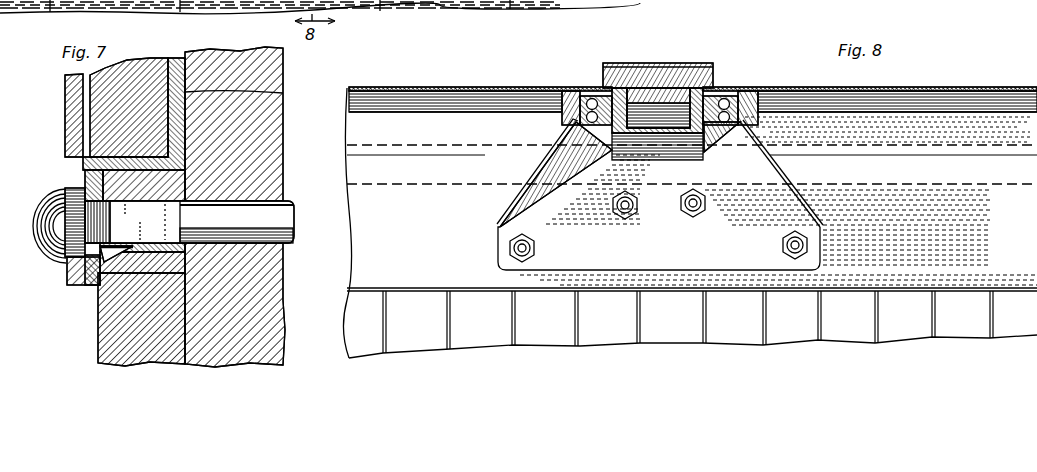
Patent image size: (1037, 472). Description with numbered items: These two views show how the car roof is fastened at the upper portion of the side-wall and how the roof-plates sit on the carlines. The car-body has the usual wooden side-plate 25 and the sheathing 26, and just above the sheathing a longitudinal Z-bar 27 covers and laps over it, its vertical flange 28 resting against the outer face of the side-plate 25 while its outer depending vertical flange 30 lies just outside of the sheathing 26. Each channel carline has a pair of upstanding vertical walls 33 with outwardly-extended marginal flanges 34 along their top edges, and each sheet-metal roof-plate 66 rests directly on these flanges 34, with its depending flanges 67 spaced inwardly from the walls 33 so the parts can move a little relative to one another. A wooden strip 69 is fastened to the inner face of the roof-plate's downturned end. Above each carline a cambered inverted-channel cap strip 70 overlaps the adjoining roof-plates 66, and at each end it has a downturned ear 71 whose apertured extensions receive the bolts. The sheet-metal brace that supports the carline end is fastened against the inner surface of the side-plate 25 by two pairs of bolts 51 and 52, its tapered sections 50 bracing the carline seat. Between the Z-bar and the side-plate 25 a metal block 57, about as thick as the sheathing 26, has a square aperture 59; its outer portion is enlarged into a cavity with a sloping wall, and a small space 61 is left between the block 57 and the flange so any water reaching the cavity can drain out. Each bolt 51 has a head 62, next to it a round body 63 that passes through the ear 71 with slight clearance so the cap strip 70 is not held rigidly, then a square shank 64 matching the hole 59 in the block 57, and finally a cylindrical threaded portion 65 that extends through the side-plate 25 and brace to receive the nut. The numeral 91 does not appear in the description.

In FIG. 7, the side-plate 25 is at (285, 320).
In FIG. 8, the side-plate 25 is at (692, 242).
In FIG. 7, the sheathing 26 is at (100, 341).
In FIG. 8, the sheathing 26 is at (792, 335).
In FIG. 7, the Z-bar 27 is at (82, 178).
In FIG. 7, the vertical flange 28 is at (178, 128).
In FIG. 8, the vertical flange 28 is at (690, 223).
In FIG. 7, the outer depending vertical flange 30 is at (120, 272).
In FIG. 8, the upstanding vertical walls 33 is at (581, 110).
In FIG. 8, the marginal flanges 34 is at (575, 95).
In FIG. 8, the tapered sections 50 is at (543, 170).
In FIG. 7, the bolts 51 is at (36, 216).
In FIG. 8, the bolts 51 is at (687, 194).
In FIG. 8, the bolts 52 is at (535, 249).
In FIG. 7, the metal block 57 is at (130, 160).
In FIG. 7, the aperture 59 is at (83, 168).
In FIG. 7, the small space 61 is at (93, 287).
In FIG. 7, the head 62 is at (60, 195).
In FIG. 7, the round body 63 is at (101, 222).
In FIG. 7, the shank 64 is at (145, 222).
In FIG. 7, the cylindrical portion 65 is at (294, 216).
In FIG. 8, the roof-plate 66 is at (457, 88).
In FIG. 8, the depending flanges 67 is at (703, 64).
In FIG. 7, the wooden strip 69 is at (116, 107).
In FIG. 8, the cap strip 70 is at (646, 63).
In FIG. 8, the downturned ear 71 is at (630, 122).
In FIG. 7, the member 91 is at (22, 13).